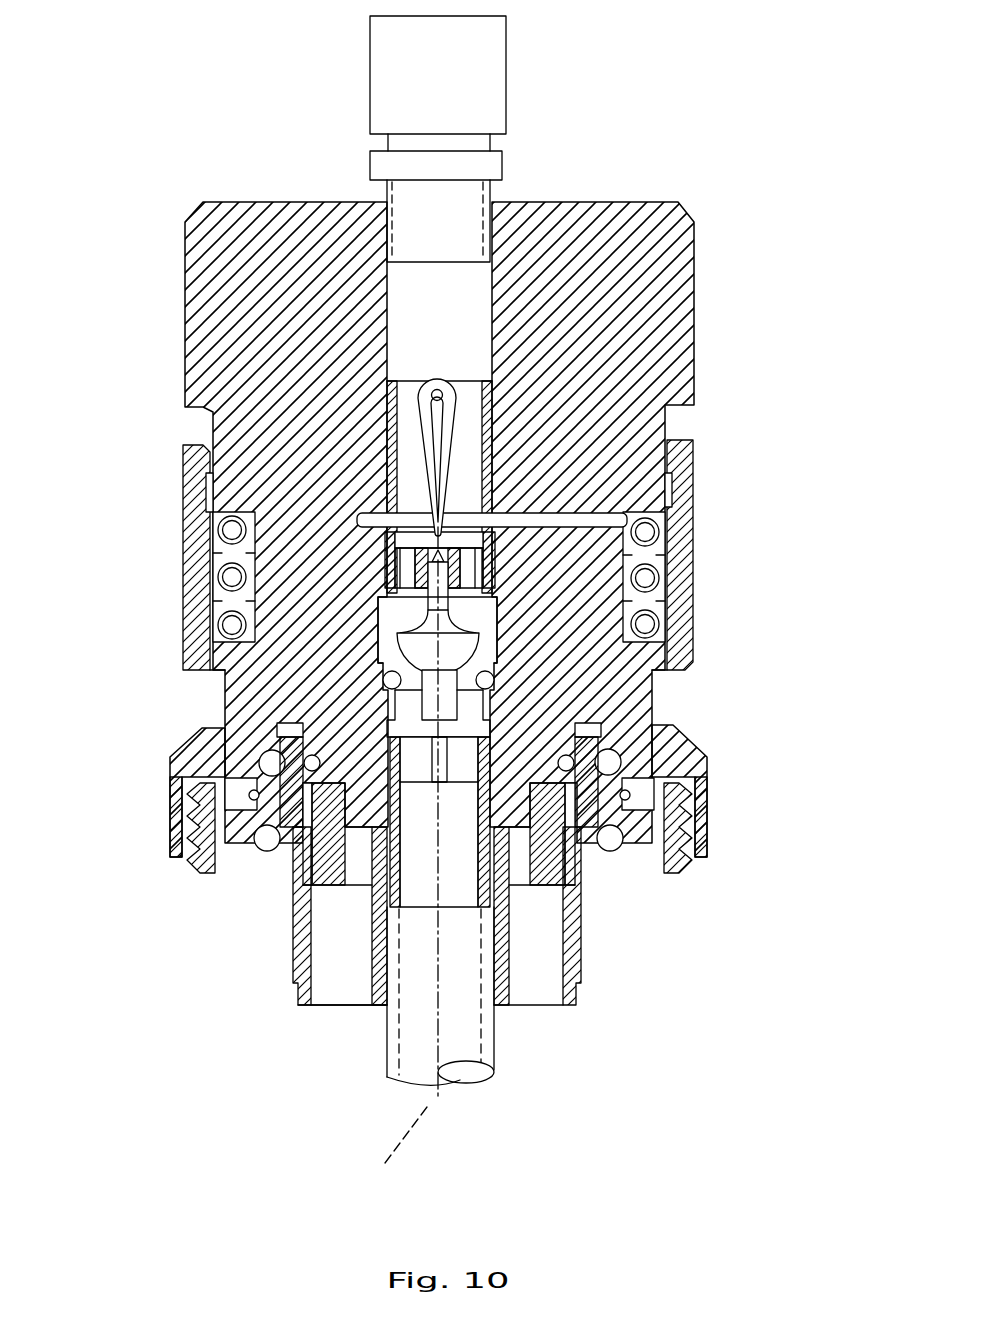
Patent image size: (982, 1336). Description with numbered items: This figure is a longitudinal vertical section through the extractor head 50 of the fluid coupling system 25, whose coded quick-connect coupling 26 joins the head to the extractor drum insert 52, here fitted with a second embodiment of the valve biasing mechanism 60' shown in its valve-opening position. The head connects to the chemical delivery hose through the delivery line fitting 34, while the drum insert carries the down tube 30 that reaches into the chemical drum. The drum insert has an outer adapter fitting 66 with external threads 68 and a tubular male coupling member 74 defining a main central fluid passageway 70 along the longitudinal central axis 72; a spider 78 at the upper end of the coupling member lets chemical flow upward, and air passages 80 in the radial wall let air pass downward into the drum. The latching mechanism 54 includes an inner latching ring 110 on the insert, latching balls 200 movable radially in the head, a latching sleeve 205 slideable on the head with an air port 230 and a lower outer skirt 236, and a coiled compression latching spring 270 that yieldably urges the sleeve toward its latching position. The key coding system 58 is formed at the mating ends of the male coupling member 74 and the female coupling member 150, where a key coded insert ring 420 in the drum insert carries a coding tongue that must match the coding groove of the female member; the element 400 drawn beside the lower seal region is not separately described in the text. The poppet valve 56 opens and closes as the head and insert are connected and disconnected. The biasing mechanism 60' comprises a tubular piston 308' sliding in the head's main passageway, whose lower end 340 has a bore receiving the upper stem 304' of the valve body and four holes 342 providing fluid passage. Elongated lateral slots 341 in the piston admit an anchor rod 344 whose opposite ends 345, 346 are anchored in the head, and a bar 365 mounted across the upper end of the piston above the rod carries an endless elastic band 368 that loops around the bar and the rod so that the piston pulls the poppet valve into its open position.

The fluid coupling system 25 is at (393, 429).
The coded quick-connect coupling 26 is at (317, 999).
The down tube 30 is at (398, 1078).
The delivery line fitting 34 is at (506, 78).
The extractor head 50 is at (187, 200).
The extractor drum insert 52 is at (296, 1010).
The latching mechanism 54 is at (727, 737).
The poppet valve 56 is at (400, 643).
The key coding system 58 is at (268, 875).
The valve biasing mechanism 60' is at (541, 455).
The adapter fitting 66 is at (667, 870).
The external threads 68 is at (293, 957).
The main central fluid passageway 70 is at (411, 892).
The longitudinal central axis 72 is at (372, 1177).
The tubular male coupling member 74 is at (477, 800).
The spider 78 is at (437, 783).
The air passages 80 is at (540, 995).
The inner latching ring 110 is at (583, 833).
The female coupling member 150 is at (490, 843).
The latching balls 200 is at (627, 753).
The latching sleeve 205 is at (693, 597).
The air port 230 is at (693, 487).
The lower outer skirt 236 is at (707, 815).
The coiled compression latching spring 270 is at (660, 560).
The upper stem 304' is at (438, 661).
The tubular piston 308' is at (589, 339).
The lower end of piston 340 is at (380, 585).
The lateral slots 341 is at (383, 498).
The holes 342 is at (466, 575).
The anchor rod 344 is at (541, 528).
The anchor rod end 345 is at (620, 512).
The anchor rod end 346 is at (368, 533).
The bar 365 is at (450, 383).
The elastic band 368 is at (427, 382).
The seal insert 400 is at (368, 828).
The key coded insert ring 420 is at (592, 813).